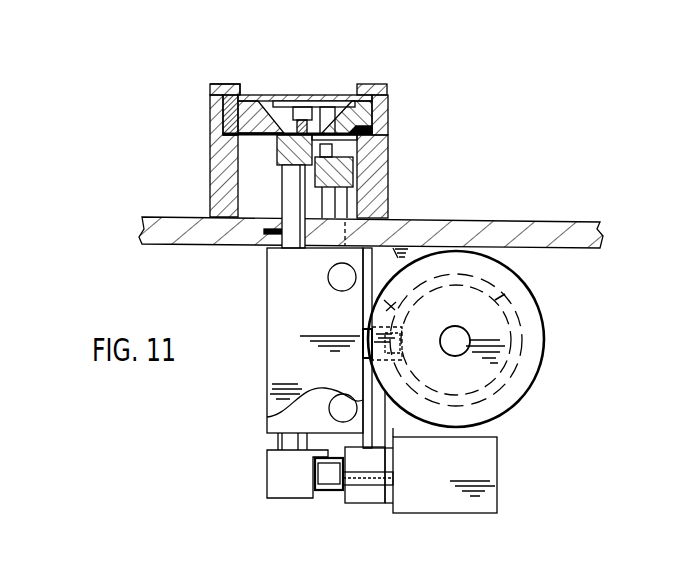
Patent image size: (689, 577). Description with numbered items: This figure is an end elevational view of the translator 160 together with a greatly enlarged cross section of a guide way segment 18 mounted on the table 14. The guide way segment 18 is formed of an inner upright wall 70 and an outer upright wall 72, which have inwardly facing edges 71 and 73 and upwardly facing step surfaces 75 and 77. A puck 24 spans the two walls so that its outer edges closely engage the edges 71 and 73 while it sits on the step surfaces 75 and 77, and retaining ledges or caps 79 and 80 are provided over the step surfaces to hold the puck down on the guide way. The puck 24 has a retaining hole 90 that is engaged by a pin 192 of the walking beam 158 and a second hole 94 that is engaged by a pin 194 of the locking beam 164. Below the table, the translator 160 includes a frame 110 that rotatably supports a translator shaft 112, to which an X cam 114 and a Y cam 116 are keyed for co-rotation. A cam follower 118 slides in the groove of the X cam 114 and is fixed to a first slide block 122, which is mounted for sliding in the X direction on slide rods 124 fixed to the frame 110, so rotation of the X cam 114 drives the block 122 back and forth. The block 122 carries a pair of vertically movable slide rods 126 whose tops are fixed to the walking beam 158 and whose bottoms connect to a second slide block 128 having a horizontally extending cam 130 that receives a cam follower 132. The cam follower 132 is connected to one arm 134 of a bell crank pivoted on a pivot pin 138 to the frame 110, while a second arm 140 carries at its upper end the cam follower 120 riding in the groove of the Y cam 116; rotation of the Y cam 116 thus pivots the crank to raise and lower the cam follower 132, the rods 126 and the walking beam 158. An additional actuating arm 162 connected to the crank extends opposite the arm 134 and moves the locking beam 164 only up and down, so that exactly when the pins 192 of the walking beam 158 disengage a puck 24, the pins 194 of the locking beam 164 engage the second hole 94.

The table 14 is at (535, 226).
The side segment 18 is at (141, 122).
The puck 24 is at (268, 97).
The inner upright wall 70 is at (386, 169).
The inwardly facing edge 71 is at (386, 101).
The outer upright wall 72 is at (208, 177).
The inwardly facing edge 73 is at (212, 97).
The step surface 75 is at (388, 125).
The step surface 77 is at (227, 127).
The retaining ledge or cap 79 is at (372, 86).
The retaining ledge or cap 80 is at (227, 85).
The retaining hole 90 is at (303, 106).
The second hole 94 is at (332, 98).
The frame 110 is at (490, 450).
The translator shaft 112 is at (450, 351).
The X cam 114 is at (542, 319).
The Y cam 116 is at (495, 295).
The cam follower 118 is at (390, 301).
The cam follower 120 is at (413, 318).
The first slide block 122 is at (283, 328).
The slide rod 124 is at (328, 277).
The slide rod 126 is at (263, 244).
The second slide block 128 is at (277, 478).
The horizontally extending cam 130 is at (313, 477).
The cam follower 132 is at (325, 496).
The arm 134 is at (367, 493).
The pivot pin 138 is at (389, 468).
The second arm 140 is at (277, 415).
The walking beam 158 is at (296, 173).
The translator 160 is at (546, 396).
The additional actuating arm 162 is at (355, 493).
The locking beam 164 is at (354, 176).
The pin 192 is at (277, 140).
The pin 194 is at (334, 150).